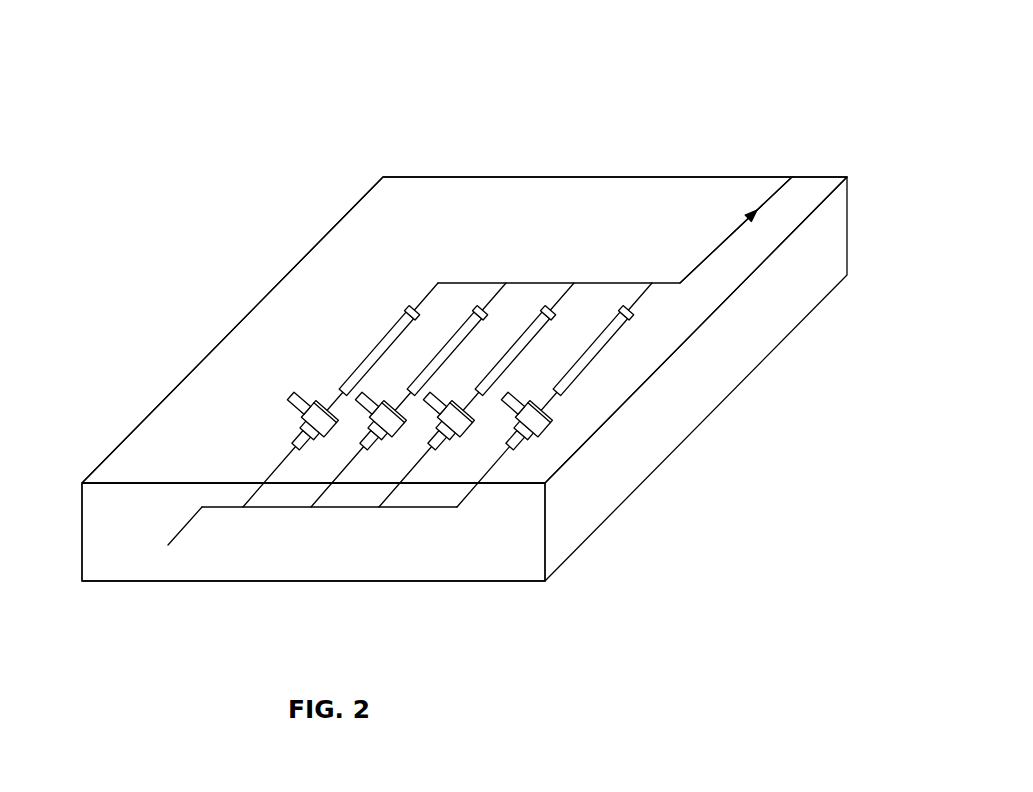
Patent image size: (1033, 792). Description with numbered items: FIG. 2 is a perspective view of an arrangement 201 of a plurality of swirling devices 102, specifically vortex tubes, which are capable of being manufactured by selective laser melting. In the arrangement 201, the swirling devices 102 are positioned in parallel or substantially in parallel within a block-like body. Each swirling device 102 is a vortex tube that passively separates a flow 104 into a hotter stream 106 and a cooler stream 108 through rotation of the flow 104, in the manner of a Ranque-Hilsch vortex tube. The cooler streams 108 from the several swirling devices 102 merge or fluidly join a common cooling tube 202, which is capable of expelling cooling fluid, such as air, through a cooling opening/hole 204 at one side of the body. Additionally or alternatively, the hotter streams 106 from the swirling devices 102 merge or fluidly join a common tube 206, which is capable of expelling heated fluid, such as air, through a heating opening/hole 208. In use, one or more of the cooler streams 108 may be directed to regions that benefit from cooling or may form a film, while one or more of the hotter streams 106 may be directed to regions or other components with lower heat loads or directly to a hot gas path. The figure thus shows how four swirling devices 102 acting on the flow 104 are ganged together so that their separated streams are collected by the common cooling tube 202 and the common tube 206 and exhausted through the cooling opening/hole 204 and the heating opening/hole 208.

The swirling device 102 is at (320, 445).
The flow 104 is at (489, 398).
The hotter stream 106 is at (723, 240).
The cooler stream 108 is at (203, 510).
The arrangement 201 is at (401, 233).
The common cooling tube 202 is at (374, 537).
The cooling opening/hole 204 is at (165, 547).
The common tube 206 is at (557, 255).
The heating opening/hole 208 is at (796, 147).